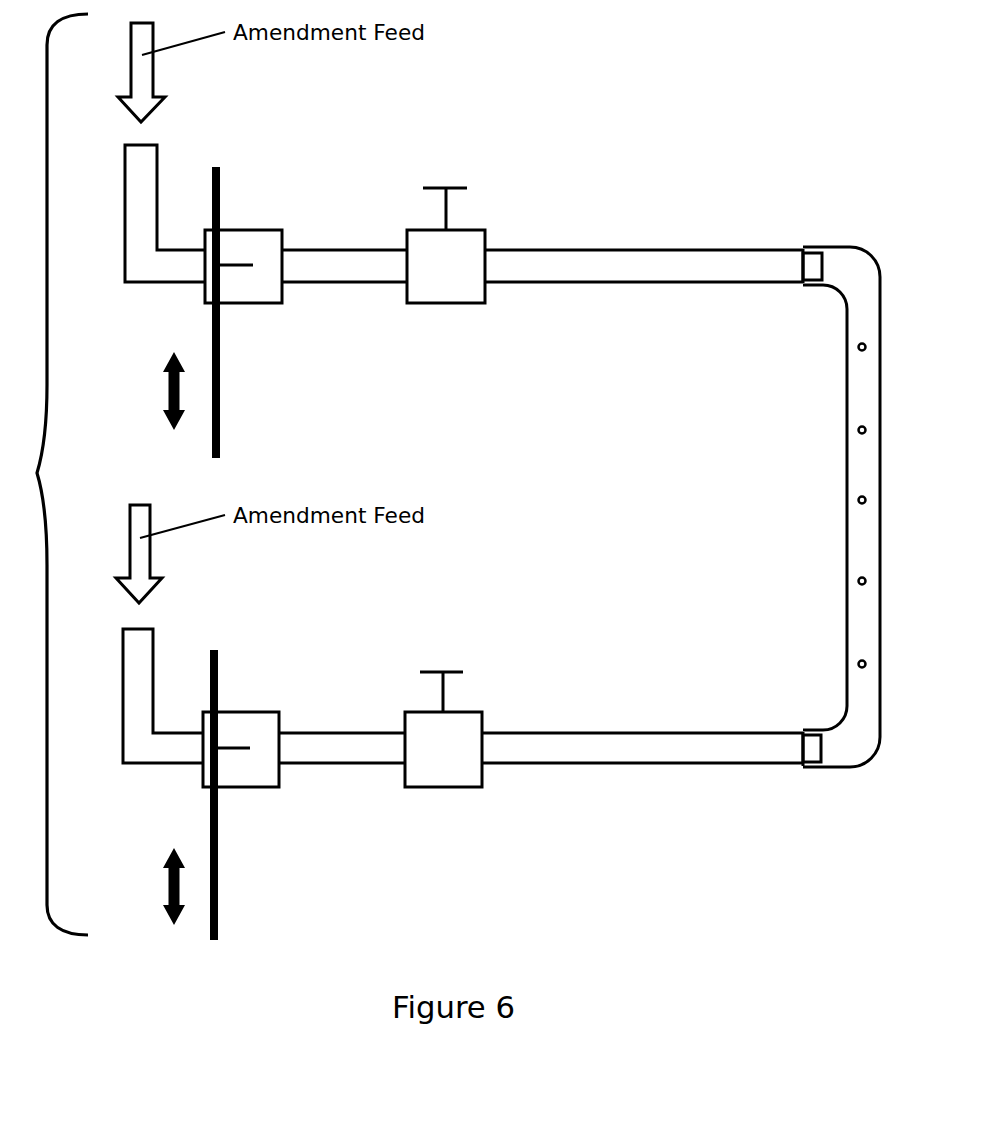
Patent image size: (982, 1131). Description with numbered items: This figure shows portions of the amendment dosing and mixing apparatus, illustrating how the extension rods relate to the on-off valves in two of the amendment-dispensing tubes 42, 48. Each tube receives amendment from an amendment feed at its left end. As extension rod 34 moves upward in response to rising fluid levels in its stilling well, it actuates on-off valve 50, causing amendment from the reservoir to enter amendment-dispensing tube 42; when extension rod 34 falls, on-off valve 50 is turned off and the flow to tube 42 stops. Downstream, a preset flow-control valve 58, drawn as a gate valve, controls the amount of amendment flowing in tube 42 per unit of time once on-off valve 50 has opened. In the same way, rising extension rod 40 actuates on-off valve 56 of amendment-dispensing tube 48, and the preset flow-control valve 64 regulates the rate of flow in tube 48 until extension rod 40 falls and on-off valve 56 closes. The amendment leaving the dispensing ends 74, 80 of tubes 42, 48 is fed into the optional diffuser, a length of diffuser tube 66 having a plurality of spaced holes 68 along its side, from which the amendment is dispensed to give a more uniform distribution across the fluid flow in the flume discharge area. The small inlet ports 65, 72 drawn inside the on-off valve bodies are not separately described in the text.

The extension rod 34 is at (223, 907).
The extension rod 40 is at (228, 435).
The amendment-dispensing tube 42 is at (636, 772).
The amendment-dispensing tube 48 is at (638, 290).
The on-off valve 50 is at (273, 780).
The on-off valve 56 is at (275, 297).
The flow-control valve 58 is at (448, 757).
The flow-control valve 64 is at (452, 273).
The inlet port 65 is at (240, 740).
The diffuser tube 66 is at (840, 307).
The spaced holes 68 is at (857, 660).
The inlet port 72 is at (243, 258).
The dispensing end 74 is at (763, 723).
The dispensing end 80 is at (768, 243).